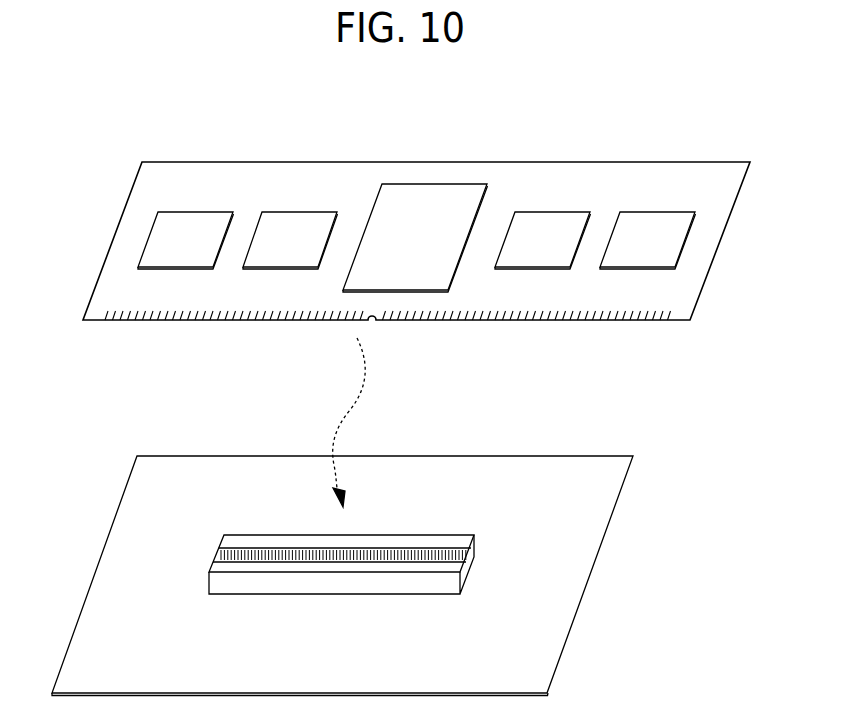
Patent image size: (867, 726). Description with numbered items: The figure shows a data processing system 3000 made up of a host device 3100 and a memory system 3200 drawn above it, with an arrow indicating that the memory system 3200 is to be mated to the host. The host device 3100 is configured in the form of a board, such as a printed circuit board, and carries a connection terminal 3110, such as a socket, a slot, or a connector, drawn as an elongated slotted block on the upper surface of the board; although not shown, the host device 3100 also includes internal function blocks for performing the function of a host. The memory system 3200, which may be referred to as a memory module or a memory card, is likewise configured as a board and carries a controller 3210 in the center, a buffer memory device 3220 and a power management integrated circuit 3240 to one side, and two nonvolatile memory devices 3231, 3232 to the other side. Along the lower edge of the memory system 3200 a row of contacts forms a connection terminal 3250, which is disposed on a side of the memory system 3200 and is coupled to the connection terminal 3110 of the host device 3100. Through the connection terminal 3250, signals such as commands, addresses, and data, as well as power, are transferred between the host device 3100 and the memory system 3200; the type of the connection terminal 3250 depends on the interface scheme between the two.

The data processing system 3000 is at (230, 115).
The host device 3100 is at (342, 576).
The connection terminal 3110 is at (495, 529).
The memory system 3200 is at (416, 241).
The controller 3210 is at (415, 238).
The buffer memory device 3220 is at (290, 240).
The nonvolatile memory device 3231 is at (543, 240).
The nonvolatile memory device 3232 is at (648, 240).
The power management integrated circuit 3240 is at (186, 240).
The connection terminal 3250 is at (130, 321).